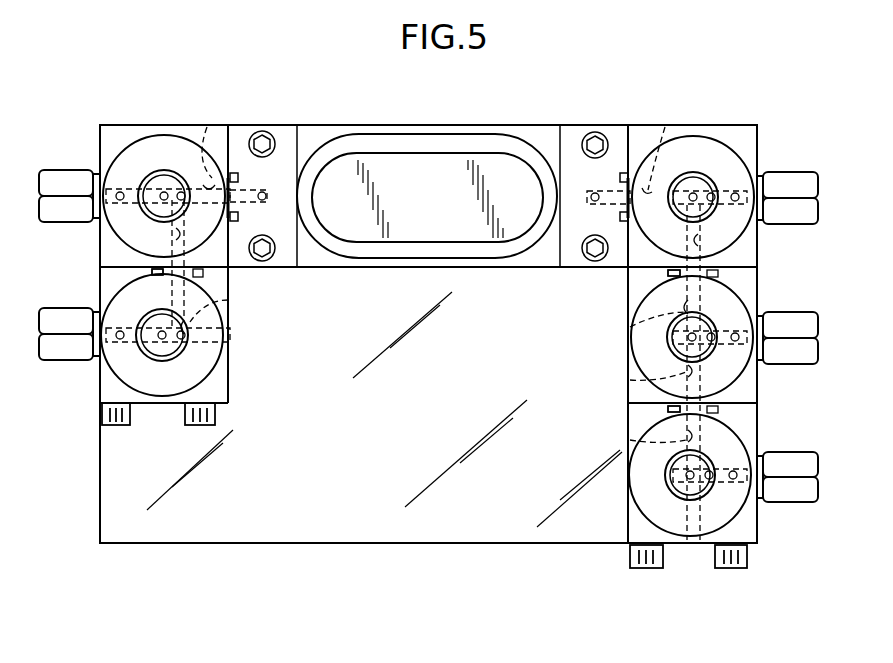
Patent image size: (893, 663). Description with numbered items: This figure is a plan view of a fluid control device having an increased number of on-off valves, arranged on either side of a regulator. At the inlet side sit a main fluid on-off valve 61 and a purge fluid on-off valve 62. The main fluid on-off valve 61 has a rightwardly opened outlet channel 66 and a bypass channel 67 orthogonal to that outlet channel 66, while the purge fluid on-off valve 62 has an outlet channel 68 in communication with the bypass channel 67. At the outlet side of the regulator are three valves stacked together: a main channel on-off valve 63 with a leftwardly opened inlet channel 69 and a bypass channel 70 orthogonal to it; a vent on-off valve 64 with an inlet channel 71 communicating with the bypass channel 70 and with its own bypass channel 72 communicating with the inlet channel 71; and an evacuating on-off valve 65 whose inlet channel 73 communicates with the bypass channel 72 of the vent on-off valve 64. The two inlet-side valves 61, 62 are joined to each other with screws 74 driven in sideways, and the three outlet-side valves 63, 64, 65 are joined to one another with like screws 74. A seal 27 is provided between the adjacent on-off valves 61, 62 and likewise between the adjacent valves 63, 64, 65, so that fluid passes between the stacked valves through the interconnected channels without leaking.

The seal 27 is at (236, 172).
The main fluid on-off valve 61 is at (115, 127).
The purge fluid on-off valve 62 is at (108, 388).
The main channel on-off valve 63 is at (742, 127).
The vent on-off valve 64 is at (745, 300).
The evacuating on-off valve 65 is at (745, 428).
The outlet channel 66 is at (207, 127).
The bypass channel 67 is at (222, 272).
The outlet channel 68 is at (228, 330).
The inlet channel 69 is at (668, 127).
The bypass channel 70 is at (705, 242).
The inlet channel 71 is at (630, 327).
The bypass channel 72 is at (630, 380).
The inlet channel 73 is at (630, 440).
The screws 74 is at (110, 428).